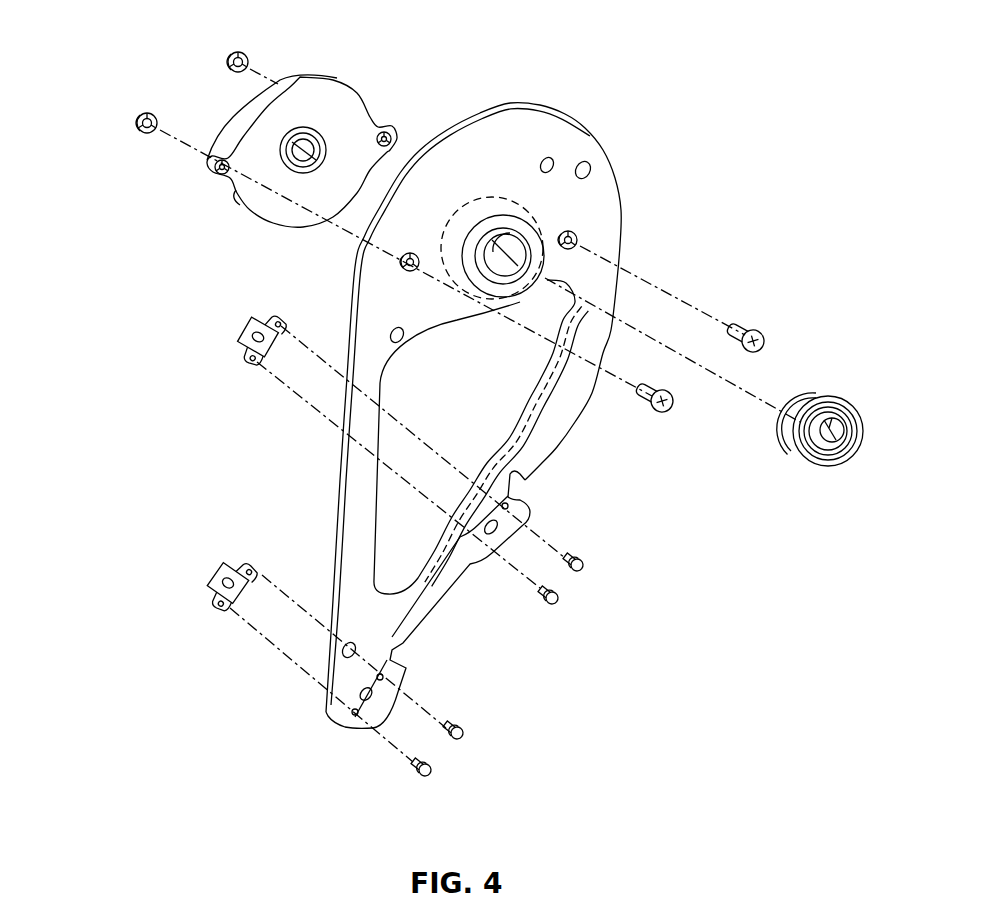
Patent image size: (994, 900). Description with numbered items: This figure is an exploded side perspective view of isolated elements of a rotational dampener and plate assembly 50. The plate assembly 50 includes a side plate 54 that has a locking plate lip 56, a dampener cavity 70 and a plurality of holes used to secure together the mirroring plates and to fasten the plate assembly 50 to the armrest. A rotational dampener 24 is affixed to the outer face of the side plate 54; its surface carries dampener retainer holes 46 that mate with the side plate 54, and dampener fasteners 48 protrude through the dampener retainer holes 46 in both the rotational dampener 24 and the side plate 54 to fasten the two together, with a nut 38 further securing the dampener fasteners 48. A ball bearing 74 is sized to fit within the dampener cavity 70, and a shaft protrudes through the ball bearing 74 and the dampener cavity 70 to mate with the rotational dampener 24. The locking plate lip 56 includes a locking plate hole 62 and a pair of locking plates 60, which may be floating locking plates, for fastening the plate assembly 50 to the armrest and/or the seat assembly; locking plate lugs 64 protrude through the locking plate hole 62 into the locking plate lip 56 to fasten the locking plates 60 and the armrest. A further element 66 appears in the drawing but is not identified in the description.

The rotational dampener 24 is at (233, 109).
The nut 38 is at (236, 51).
The dampener retainer holes 46 is at (215, 170).
The dampener fasteners 48 is at (770, 329).
The plate assembly 50 is at (491, 364).
The side plate 54 is at (591, 131).
The locking plate lip 56 is at (522, 495).
The locking plates 60 is at (240, 325).
The locking plate hole 62 is at (243, 360).
The locking plate lugs 64 is at (562, 611).
The flange 66 is at (508, 507).
The dampener cavity 70 is at (506, 236).
The ball bearing 74 is at (823, 466).